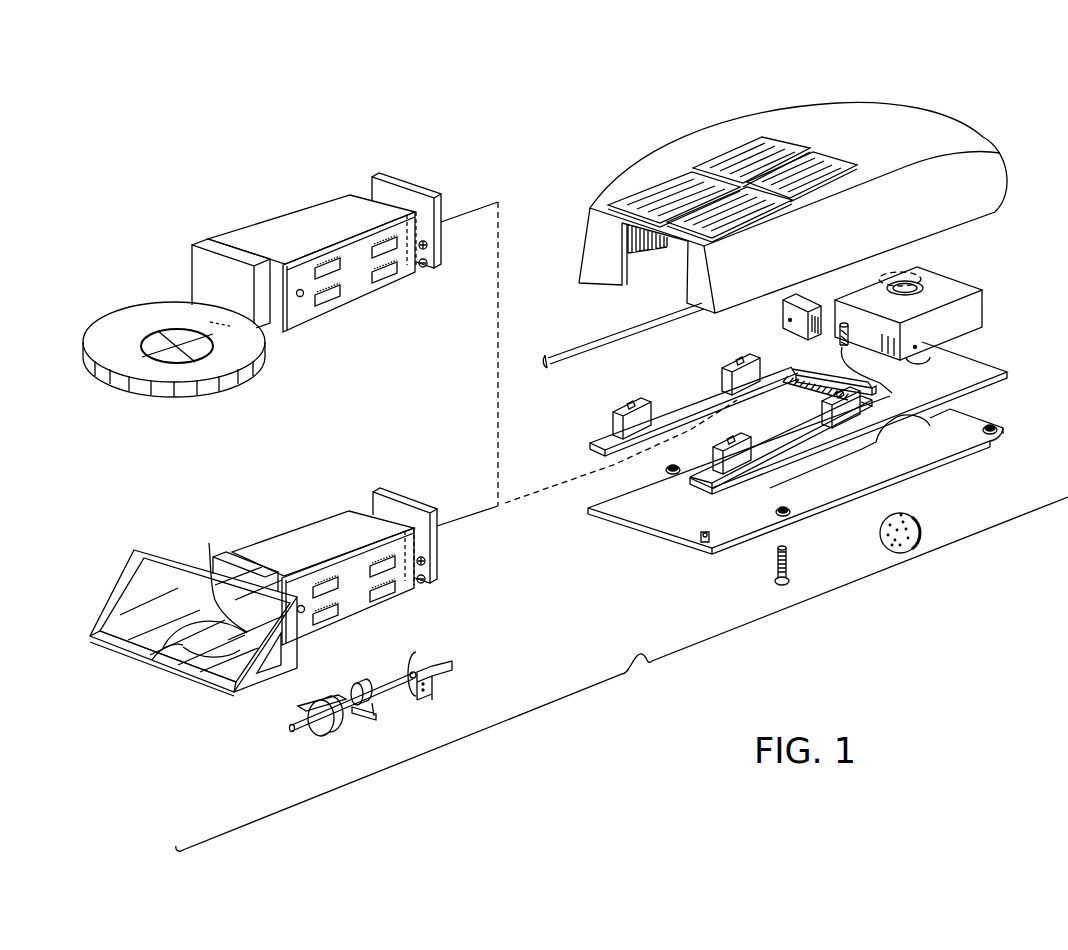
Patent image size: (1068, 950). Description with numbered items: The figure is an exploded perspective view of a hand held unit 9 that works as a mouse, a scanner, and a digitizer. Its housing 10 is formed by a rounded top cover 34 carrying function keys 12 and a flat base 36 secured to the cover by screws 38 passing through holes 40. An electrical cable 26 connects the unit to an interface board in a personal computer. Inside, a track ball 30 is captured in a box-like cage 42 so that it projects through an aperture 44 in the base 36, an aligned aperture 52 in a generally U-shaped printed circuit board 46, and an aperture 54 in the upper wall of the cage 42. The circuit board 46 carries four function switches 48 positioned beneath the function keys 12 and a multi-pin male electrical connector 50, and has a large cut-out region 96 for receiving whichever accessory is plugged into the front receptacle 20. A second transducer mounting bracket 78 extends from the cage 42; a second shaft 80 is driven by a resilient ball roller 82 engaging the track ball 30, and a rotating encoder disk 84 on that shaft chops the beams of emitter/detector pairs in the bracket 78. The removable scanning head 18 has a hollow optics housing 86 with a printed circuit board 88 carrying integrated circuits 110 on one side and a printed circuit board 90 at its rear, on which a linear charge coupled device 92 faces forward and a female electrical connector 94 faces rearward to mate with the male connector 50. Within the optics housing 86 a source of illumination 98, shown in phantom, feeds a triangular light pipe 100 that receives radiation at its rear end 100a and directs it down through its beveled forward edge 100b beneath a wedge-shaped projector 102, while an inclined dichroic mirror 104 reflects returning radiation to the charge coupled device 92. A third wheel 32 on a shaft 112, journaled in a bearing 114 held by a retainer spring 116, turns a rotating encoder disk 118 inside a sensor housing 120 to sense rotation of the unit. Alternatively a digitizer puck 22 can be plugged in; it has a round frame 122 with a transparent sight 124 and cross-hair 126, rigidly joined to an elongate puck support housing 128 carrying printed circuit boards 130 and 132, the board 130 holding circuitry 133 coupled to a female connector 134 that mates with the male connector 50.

The hand held unit 9 is at (622, 674).
The housing 10 is at (1003, 130).
The function keys 12 is at (682, 190).
The scanning head 18 is at (270, 622).
The receptacle 20 is at (658, 262).
The digitizer puck 22 is at (271, 283).
The electrical cable 26 is at (623, 327).
The track ball 30 is at (918, 518).
The third wheel 32 is at (322, 738).
The top cover 34 is at (793, 196).
The base 36 is at (943, 450).
The screws 38 is at (773, 583).
The holes 40 is at (787, 505).
The track ball cage 42 is at (886, 304).
The aperture 44 is at (940, 412).
The printed circuit board 46 is at (990, 372).
The function switches 48 is at (722, 382).
The male electrical connector 50 is at (800, 368).
The aperture 52 is at (950, 348).
The aperture 54 is at (983, 290).
The second transducer mounting bracket 78 is at (790, 300).
The second shaft 80 is at (948, 270).
The ball roller 82 is at (912, 266).
The rotating encoder disk 84 is at (832, 332).
The optics housing 86 is at (348, 600).
The printed circuit board 88 is at (307, 627).
The printed circuit board 90 is at (396, 497).
The linear charge coupled device 92 is at (373, 512).
The female electrical connector 94 is at (427, 583).
The cut-out region 96 is at (680, 450).
The source of illumination 98 is at (142, 653).
The light pipe 100 is at (203, 700).
The rear end 100a is at (217, 577).
The beveled forward edge 100b is at (177, 645).
The wedge-shaped projector 102 is at (167, 608).
The dichroic mirror 104 is at (154, 578).
The integrated circuits 110 is at (378, 600).
The shaft 112 is at (383, 681).
The bearing 114 is at (373, 703).
The retainer spring 116 is at (365, 718).
The rotating encoder disk 118 is at (418, 652).
The sensor housing 120 is at (445, 682).
The round frame 122 is at (174, 348).
The transparent sight 124 is at (190, 377).
The cross-hair 126 is at (163, 330).
The puck support housing 128 is at (301, 237).
The printed circuit board 130 is at (307, 311).
The printed circuit board 132 is at (397, 186).
The circuitry 133 is at (379, 283).
The female connector 134 is at (425, 267).